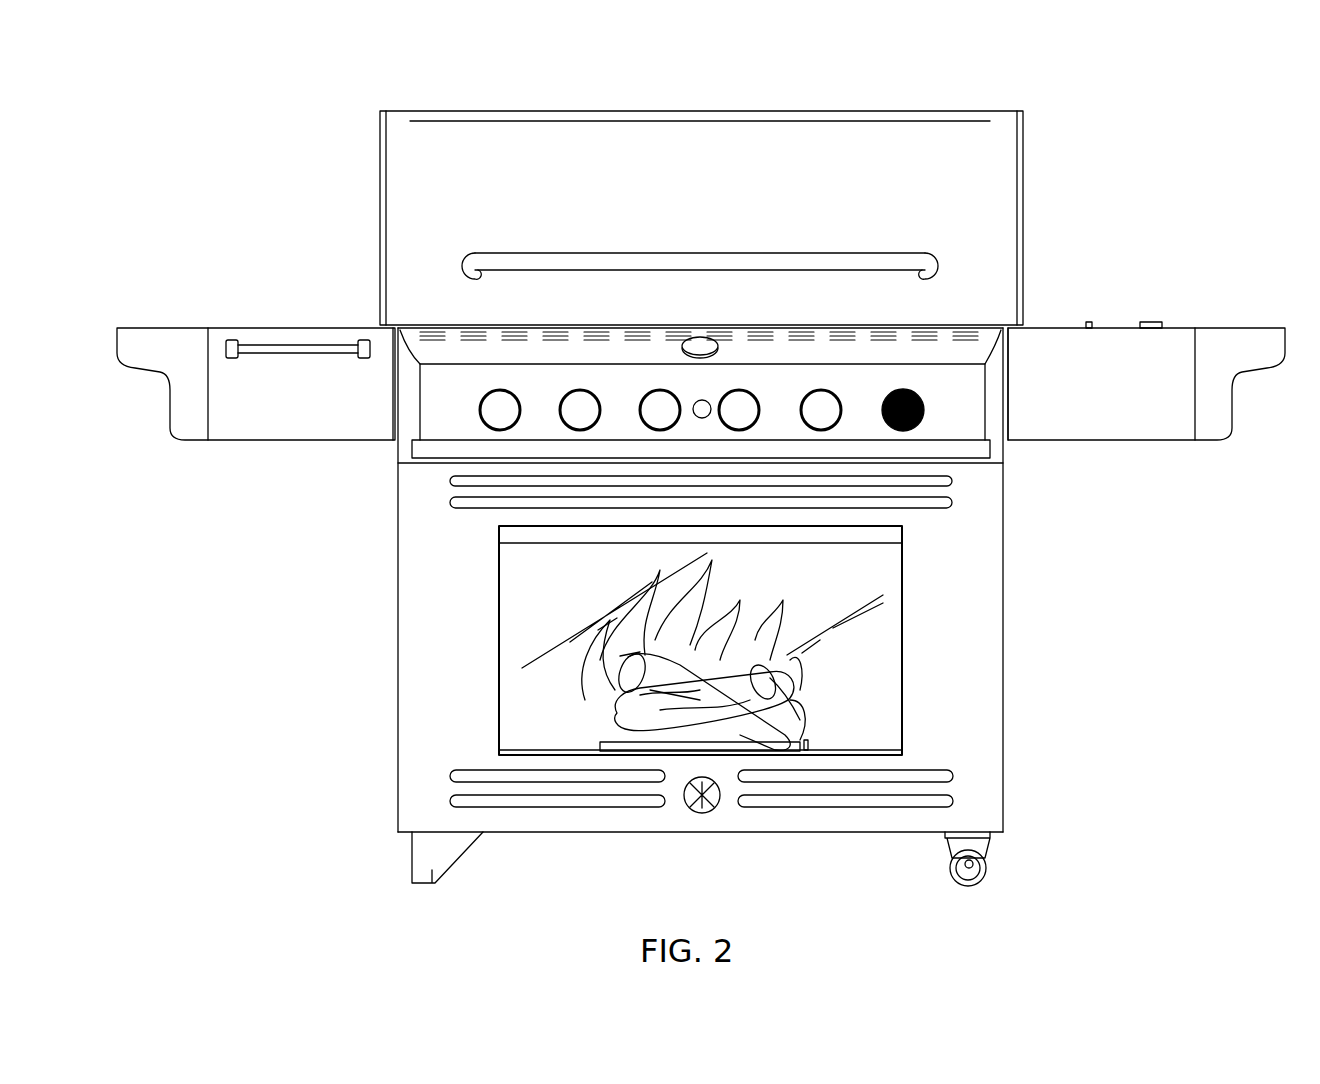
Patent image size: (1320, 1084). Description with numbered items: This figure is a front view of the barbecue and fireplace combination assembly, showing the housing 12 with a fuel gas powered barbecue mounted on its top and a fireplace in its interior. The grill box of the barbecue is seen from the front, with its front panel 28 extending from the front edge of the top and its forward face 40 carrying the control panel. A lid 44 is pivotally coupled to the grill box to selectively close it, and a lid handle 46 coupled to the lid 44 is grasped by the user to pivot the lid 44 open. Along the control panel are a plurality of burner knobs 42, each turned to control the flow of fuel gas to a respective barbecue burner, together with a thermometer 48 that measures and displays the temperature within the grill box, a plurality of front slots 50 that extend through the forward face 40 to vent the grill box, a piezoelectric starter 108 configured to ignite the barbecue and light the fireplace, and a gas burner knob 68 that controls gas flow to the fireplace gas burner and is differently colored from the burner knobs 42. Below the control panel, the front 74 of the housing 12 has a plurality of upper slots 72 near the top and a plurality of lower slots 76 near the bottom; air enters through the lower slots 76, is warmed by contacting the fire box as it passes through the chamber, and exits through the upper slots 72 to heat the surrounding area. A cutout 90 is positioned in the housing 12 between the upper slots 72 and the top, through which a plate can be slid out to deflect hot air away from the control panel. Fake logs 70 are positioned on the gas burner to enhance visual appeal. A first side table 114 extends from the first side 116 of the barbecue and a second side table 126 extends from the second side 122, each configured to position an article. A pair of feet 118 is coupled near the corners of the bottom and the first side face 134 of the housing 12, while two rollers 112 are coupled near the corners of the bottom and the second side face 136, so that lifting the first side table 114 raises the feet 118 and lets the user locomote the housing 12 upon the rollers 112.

The housing 12 is at (1005, 752).
The front panel 28 is at (965, 410).
The forward face 40 is at (445, 410).
The burner knobs 42 is at (739, 390).
The lid 44 is at (985, 160).
The lid handle 46 is at (645, 255).
The thermometer 48 is at (700, 338).
The front slots 50 is at (600, 332).
The gas burner knob 68 is at (905, 390).
The fake logs 70 is at (682, 673).
The upper slots 72 is at (947, 480).
The front 74 is at (415, 687).
The lower slots 76 is at (555, 693).
The cutout 90 is at (988, 451).
The starter 108 is at (700, 420).
The rollers 112 is at (988, 866).
The first side table 114 is at (232, 328).
The first side 116 is at (278, 328).
The feet 118 is at (420, 870).
The second side 122 is at (1008, 372).
The second side table 126 is at (1160, 358).
The first side face 134 is at (398, 630).
The second side face 136 is at (1005, 610).